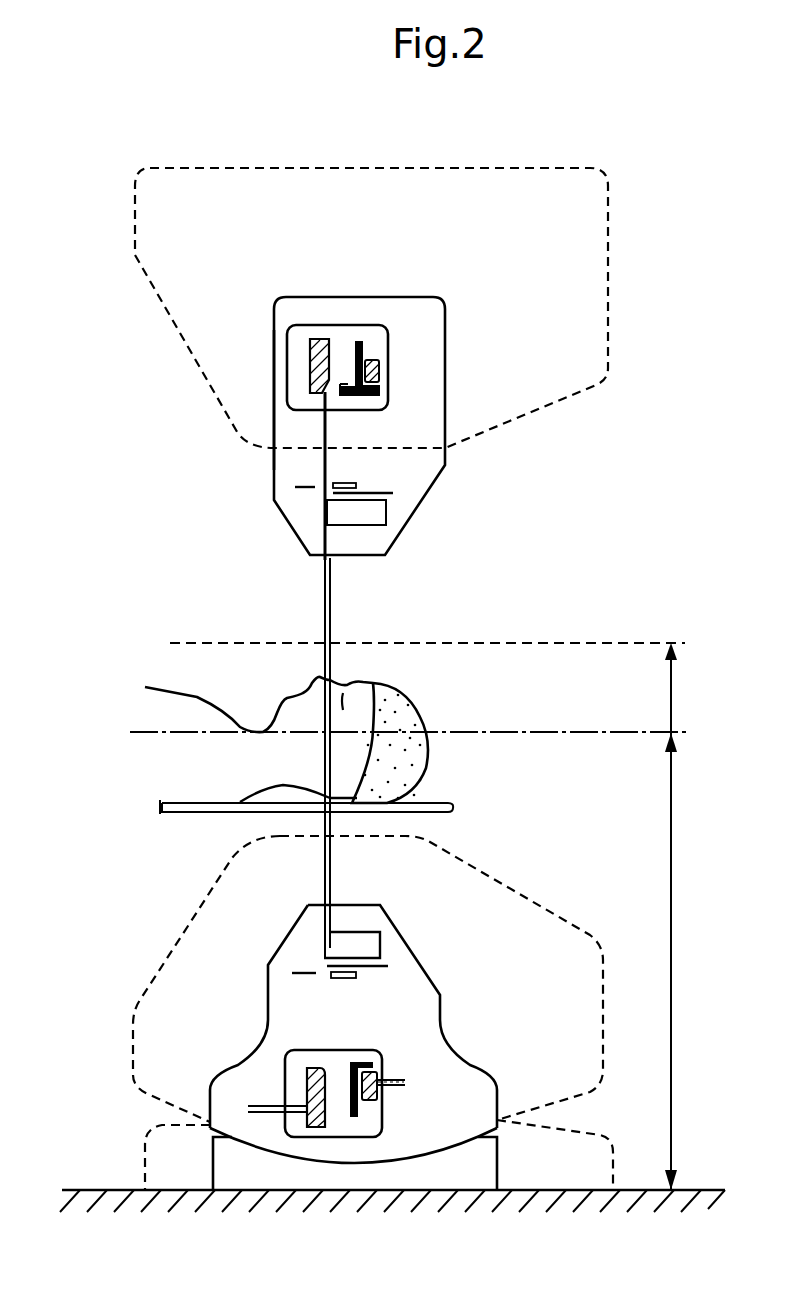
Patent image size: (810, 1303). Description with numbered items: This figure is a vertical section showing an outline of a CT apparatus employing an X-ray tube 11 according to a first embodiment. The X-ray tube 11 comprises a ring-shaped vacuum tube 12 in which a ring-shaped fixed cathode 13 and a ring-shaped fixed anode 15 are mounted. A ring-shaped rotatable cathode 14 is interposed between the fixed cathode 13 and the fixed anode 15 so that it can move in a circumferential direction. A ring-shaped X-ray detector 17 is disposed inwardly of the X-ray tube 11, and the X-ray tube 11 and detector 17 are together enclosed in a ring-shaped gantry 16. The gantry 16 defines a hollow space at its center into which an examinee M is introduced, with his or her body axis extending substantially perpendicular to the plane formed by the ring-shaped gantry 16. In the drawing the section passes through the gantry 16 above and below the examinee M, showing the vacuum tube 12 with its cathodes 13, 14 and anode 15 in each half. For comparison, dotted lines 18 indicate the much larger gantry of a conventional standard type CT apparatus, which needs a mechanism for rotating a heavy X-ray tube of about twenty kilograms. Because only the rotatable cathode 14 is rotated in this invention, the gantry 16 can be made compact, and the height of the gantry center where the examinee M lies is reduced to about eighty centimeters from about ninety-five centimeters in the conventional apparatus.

The X-ray tube 11 is at (412, 347).
The ring-shaped vacuum tube 12 is at (370, 332).
The ring-shaped fixed cathode 13 is at (382, 376).
The ring-shaped rotatable cathode 14 is at (357, 347).
The ring-shaped fixed anode 15 is at (311, 372).
The ring-shaped gantry 16 is at (274, 315).
The ring-shaped X-ray detector 17 is at (383, 948).
The conventional gantry outline 18 is at (162, 167).
The examinee M is at (425, 707).